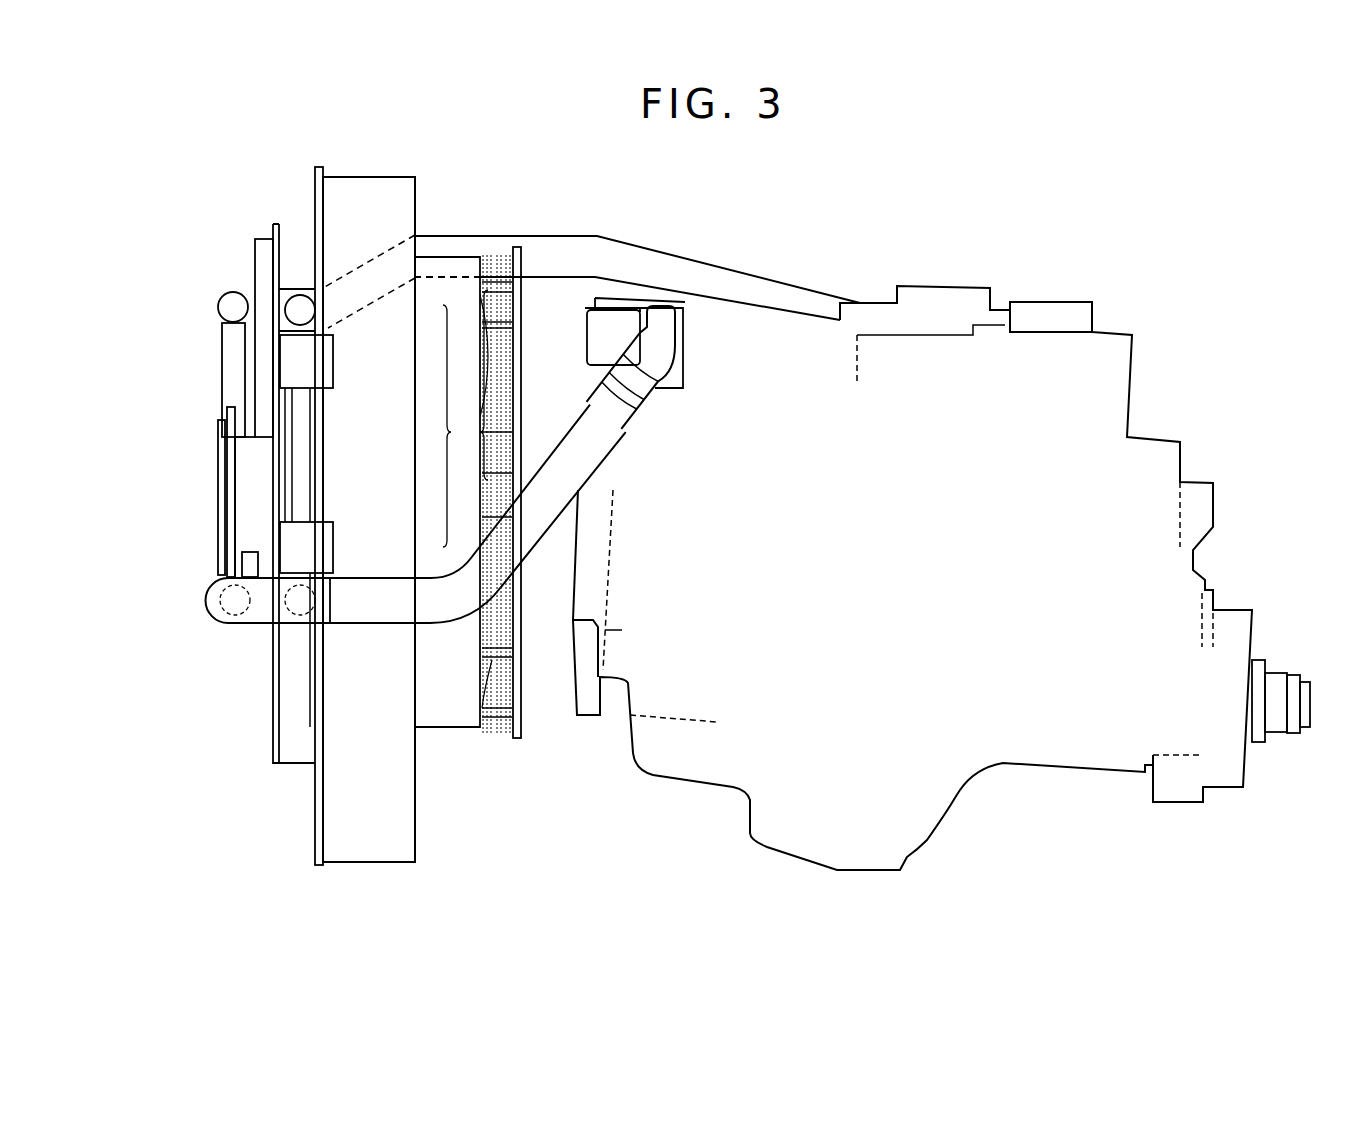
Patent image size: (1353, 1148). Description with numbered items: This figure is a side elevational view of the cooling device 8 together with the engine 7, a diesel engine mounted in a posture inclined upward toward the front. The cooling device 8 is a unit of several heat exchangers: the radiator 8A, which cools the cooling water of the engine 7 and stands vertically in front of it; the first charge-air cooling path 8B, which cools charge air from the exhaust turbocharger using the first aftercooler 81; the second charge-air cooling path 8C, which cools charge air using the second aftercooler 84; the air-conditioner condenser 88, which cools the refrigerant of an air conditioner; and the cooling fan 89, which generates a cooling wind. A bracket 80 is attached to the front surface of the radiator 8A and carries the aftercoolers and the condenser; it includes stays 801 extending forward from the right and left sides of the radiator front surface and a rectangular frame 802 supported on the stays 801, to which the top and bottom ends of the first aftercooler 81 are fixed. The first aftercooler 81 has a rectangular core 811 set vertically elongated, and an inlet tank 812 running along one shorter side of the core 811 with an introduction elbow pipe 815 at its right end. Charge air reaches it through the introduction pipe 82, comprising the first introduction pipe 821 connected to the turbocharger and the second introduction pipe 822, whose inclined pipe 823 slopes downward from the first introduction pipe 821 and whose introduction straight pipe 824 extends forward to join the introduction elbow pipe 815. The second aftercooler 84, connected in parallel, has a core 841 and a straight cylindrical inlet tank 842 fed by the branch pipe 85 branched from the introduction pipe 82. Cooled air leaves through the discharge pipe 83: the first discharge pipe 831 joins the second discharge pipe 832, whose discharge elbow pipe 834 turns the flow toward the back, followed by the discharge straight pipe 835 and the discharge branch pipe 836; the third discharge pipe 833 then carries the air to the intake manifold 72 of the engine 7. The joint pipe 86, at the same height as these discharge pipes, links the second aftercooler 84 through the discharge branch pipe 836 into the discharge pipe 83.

The engine 7 is at (1077, 303).
The intake manifold 72 is at (683, 360).
The cooling device 8 is at (240, 778).
The radiator 8A is at (365, 862).
The first charge-air cooling path 8B is at (530, 112).
The second charge-air cooling path 8C is at (465, 418).
The bracket 80 is at (255, 232).
The first aftercooler 81 is at (208, 298).
The core 811 is at (222, 383).
The inlet tank 812 is at (218, 313).
The introduction elbow pipe 815 is at (250, 297).
The introduction pipe 82 is at (563, 156).
The first introduction pipe 821 is at (537, 234).
The second introduction pipe 822 is at (430, 234).
The inclined pipe 823 is at (358, 262).
The introduction straight pipe 824 is at (289, 285).
The discharge pipe 83 is at (196, 595).
The first discharge pipe 831 is at (207, 583).
The second discharge pipe 832 is at (258, 703).
The third discharge pipe 833 is at (450, 623).
The discharge elbow pipe 834 is at (207, 617).
The discharge straight pipe 835 is at (225, 623).
The discharge branch pipe 836 is at (270, 608).
The second aftercooler 84 is at (325, 420).
The core 841 is at (311, 447).
The inlet tank 842 is at (316, 306).
The branch pipe 85 is at (306, 279).
The joint pipe 86 is at (326, 598).
The air-conditioner condenser 88 is at (218, 477).
The cooling fan 89 is at (533, 718).
The stays 801 is at (334, 357).
The rectangular frame 802 is at (281, 461).